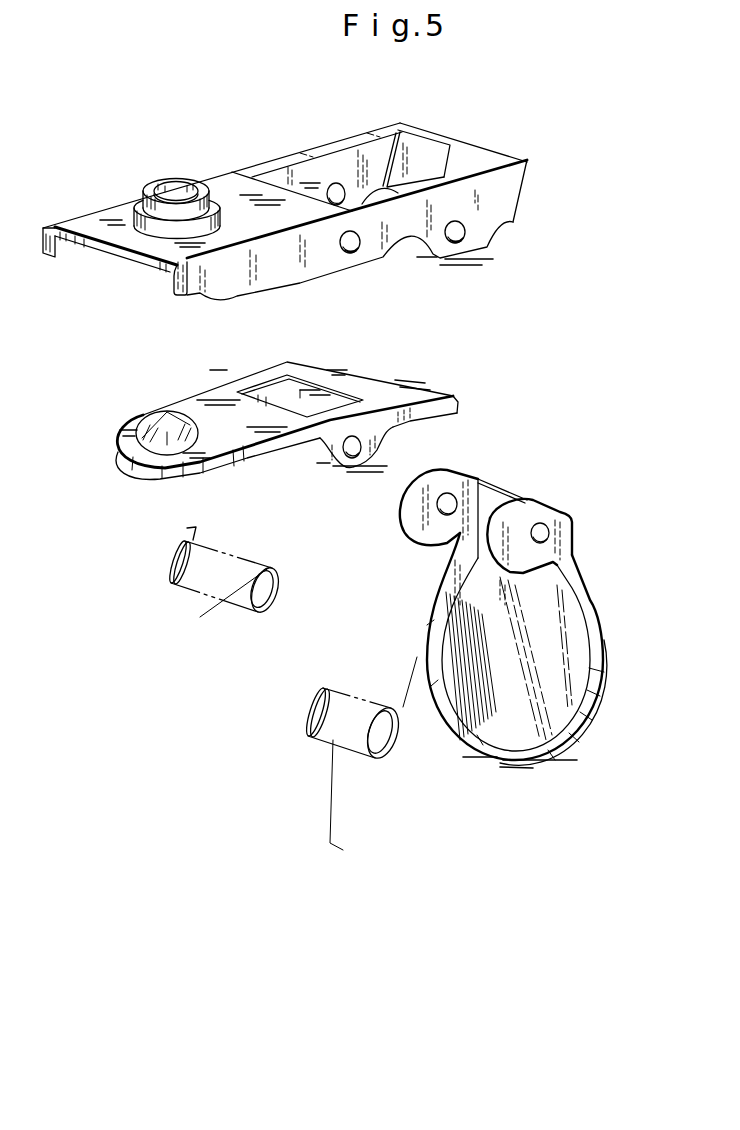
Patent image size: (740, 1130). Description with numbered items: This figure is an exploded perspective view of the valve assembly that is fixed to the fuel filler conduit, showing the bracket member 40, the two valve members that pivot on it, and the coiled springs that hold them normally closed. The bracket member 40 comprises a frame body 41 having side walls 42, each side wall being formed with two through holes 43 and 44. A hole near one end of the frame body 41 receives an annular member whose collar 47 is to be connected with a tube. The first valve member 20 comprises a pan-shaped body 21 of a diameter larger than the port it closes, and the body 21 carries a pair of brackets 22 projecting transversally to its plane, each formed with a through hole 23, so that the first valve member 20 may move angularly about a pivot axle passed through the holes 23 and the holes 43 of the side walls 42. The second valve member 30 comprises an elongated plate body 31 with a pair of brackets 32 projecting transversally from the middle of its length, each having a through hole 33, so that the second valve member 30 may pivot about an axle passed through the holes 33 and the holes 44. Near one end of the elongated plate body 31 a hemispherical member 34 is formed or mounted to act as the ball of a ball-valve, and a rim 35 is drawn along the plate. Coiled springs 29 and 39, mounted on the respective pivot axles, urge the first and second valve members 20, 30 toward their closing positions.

The first valve member 20 is at (532, 603).
The pan-shaped body 21 is at (544, 688).
The brackets 22 is at (440, 490).
The through hole 23 is at (541, 526).
The coiled spring 29 is at (315, 733).
The second valve member 30 is at (317, 420).
The elongated plate body 31 is at (233, 440).
The brackets 32 is at (318, 442).
The through hole 33 is at (350, 458).
The hemispherical member 34 is at (162, 437).
The rectangular opening 35 is at (390, 382).
The coiled spring 39 is at (173, 579).
The bracket member 40 is at (324, 209).
The frame body 41 is at (227, 195).
The side walls 42 is at (324, 268).
The through hole 43 is at (337, 183).
The through hole 44 is at (360, 253).
The collar 47 is at (166, 179).